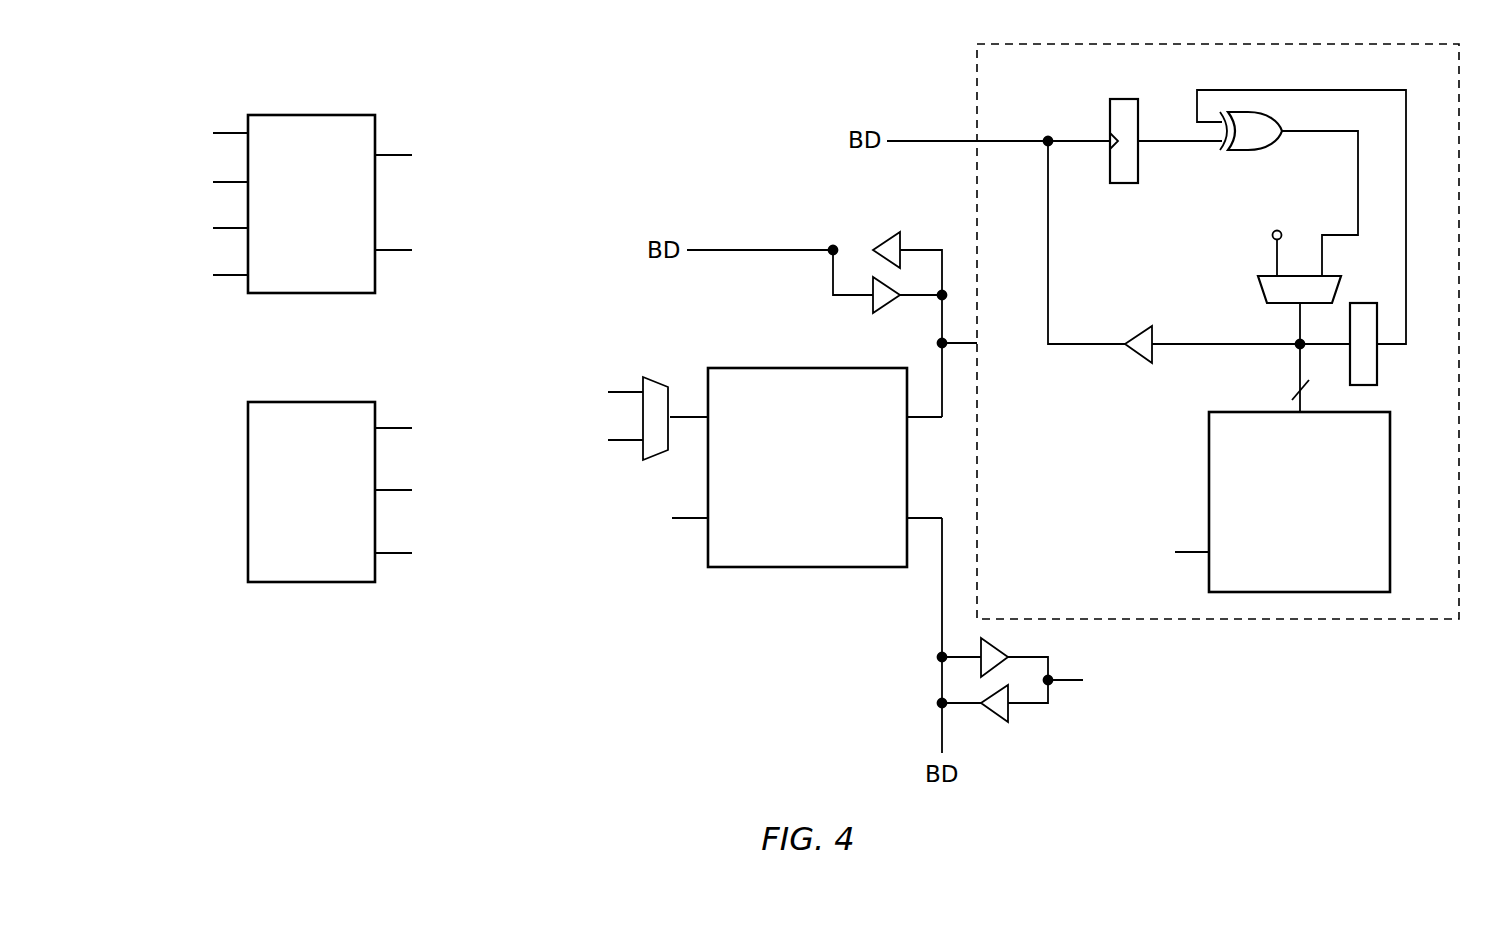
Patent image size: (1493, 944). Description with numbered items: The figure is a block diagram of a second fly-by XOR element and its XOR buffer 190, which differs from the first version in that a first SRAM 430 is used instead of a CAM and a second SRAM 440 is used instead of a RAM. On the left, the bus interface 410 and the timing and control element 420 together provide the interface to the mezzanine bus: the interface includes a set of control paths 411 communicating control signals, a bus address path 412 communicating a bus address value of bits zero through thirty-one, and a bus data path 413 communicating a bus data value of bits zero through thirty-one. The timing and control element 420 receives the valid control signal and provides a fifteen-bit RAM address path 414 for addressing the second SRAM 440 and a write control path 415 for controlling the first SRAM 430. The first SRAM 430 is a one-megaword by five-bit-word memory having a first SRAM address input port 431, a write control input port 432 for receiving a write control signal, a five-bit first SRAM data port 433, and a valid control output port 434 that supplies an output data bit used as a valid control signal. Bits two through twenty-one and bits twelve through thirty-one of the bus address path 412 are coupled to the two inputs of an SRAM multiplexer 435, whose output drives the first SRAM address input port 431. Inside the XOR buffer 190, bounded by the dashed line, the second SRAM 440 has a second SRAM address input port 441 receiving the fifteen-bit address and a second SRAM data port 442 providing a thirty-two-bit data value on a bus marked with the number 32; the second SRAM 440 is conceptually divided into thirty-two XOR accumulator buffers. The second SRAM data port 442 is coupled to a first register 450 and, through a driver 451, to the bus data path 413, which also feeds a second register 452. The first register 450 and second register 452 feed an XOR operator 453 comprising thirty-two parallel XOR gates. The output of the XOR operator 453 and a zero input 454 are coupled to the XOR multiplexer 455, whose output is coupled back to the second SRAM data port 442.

The timing and control element 420 is at (312, 114).
The RAM address path 414 is at (390, 153).
The write control path 415 is at (390, 248).
The bus interface 410 is at (312, 401).
The control paths 411 is at (390, 426).
The bus address path 412 is at (388, 488).
The bus data path 413 is at (393, 556).
The first SRAM 430 is at (808, 568).
The first SRAM address input port 431 is at (713, 408).
The write control input port 432 is at (713, 528).
The first SRAM data port 433 is at (899, 408).
The valid control output port 434 is at (899, 527).
The SRAM multiplexer 435 is at (658, 378).
The XOR buffer 190 is at (1165, 621).
The second register 452 is at (1110, 122).
The XOR operator 453 is at (1243, 150).
The zero input 454 is at (1273, 233).
The XOR multiplexer 455 is at (1338, 290).
The driver 451 is at (1140, 327).
The first register 450 is at (1378, 362).
The 32-bit bus 32 is at (1283, 393).
The second SRAM 440 is at (1390, 508).
The second SRAM address input port 441 is at (1205, 548).
The second SRAM data port 442 is at (1290, 417).